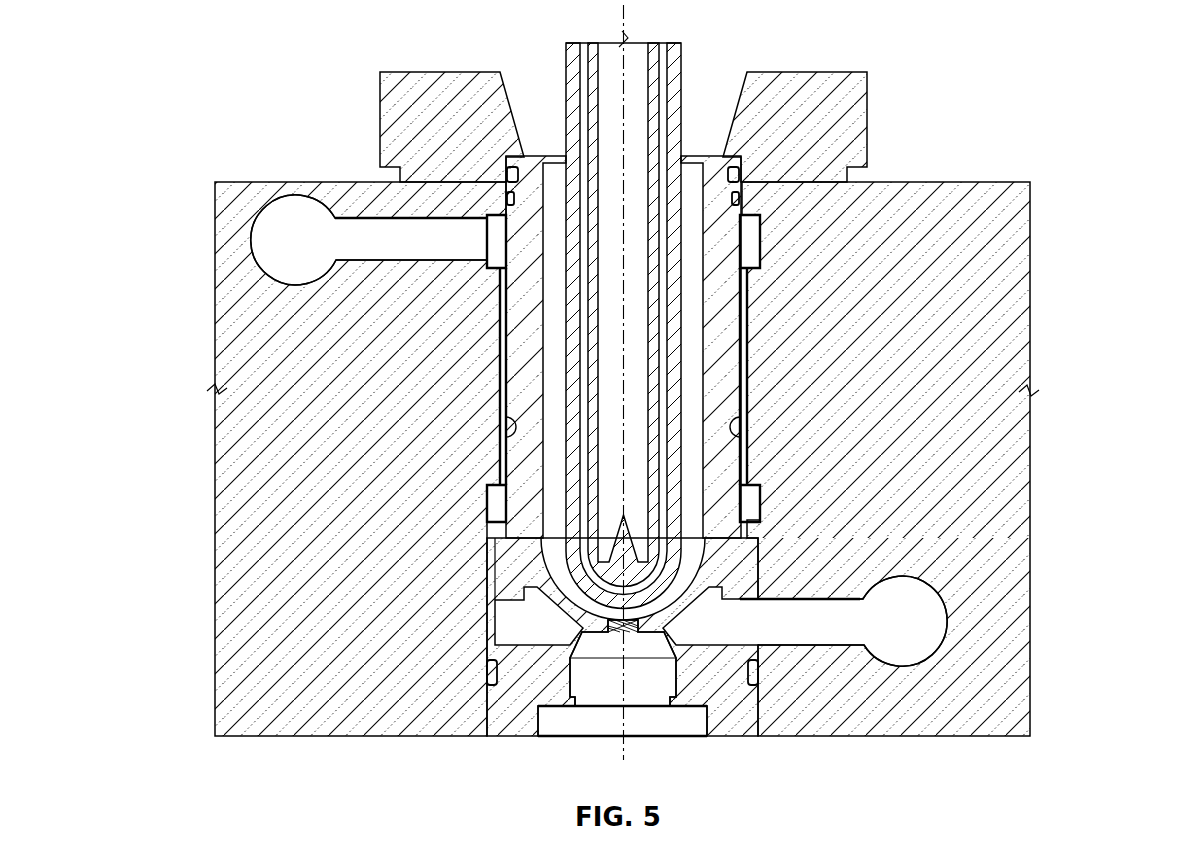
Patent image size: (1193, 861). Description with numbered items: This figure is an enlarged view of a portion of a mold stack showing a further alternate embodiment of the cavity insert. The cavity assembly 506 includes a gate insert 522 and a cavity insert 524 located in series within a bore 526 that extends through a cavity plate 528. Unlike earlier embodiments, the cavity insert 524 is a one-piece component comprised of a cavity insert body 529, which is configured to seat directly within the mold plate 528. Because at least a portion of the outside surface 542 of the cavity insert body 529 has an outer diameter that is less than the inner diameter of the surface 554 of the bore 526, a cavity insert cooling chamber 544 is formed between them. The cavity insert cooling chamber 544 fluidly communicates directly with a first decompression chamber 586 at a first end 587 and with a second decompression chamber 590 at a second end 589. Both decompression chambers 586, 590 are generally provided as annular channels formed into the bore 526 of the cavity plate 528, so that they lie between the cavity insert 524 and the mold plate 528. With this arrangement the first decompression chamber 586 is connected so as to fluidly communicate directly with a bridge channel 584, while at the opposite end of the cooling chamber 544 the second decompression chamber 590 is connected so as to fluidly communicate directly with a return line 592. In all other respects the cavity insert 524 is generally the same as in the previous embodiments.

The cavity assembly 506 is at (116, 645).
The gate insert 522 is at (518, 703).
The cavity insert 524 is at (735, 373).
The bore 526 is at (745, 448).
The cavity plate 528 is at (1003, 218).
The cavity insert body 529 is at (747, 333).
The outside surface 542 is at (497, 480).
The cavity insert cooling chamber 544 is at (497, 368).
The surface of bore 554 is at (497, 443).
The bridge channel 584 is at (485, 567).
The first decompression chamber 586 is at (760, 493).
The first end 587 is at (753, 485).
The second end 589 is at (747, 285).
The second decompression chamber 590 is at (752, 242).
The return line 592 is at (364, 242).